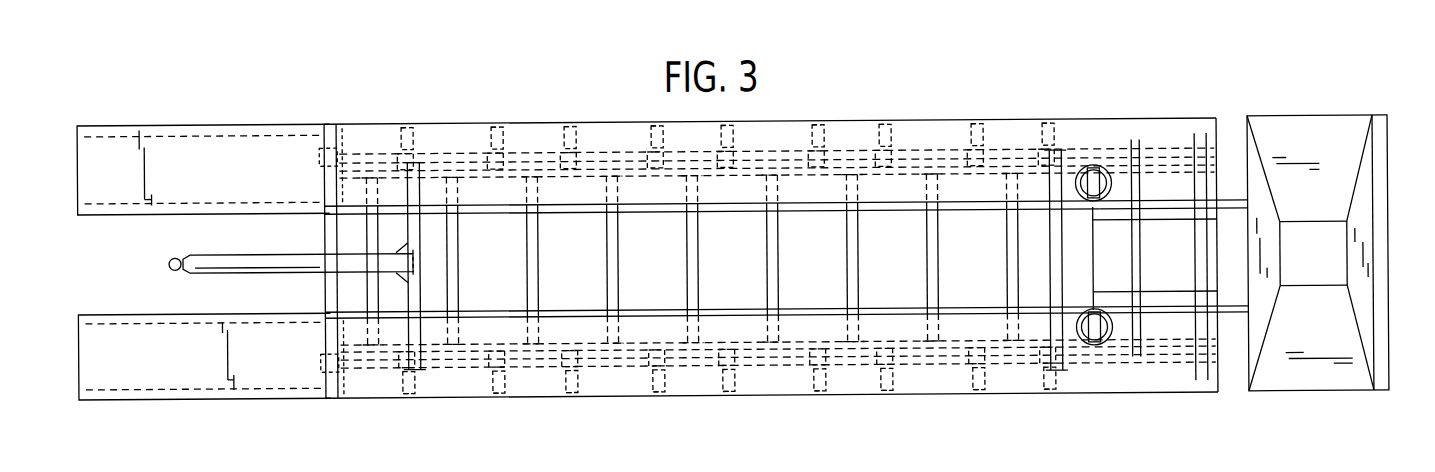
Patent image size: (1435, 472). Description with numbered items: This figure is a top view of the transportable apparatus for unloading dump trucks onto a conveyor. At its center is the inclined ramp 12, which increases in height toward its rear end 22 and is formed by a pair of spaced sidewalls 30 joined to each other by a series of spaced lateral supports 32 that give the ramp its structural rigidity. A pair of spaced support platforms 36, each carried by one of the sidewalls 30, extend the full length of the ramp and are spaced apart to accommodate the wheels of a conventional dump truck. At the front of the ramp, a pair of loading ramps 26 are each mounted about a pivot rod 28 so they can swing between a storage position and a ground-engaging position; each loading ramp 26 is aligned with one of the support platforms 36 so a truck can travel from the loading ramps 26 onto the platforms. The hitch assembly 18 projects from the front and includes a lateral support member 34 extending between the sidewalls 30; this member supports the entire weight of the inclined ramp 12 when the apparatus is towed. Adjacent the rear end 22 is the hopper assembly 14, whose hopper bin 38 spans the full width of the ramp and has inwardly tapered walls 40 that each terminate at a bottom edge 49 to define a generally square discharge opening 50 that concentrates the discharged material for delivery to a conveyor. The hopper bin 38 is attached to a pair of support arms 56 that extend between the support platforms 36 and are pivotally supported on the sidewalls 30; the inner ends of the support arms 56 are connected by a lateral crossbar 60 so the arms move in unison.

The inclined ramp 12 is at (827, 90).
The hopper assembly 14 is at (1300, 90).
The hitch assembly 18 is at (212, 257).
The rear end 22 is at (1220, 134).
The loading ramps 26 is at (197, 127).
The pivot rod 28 is at (328, 128).
The sidewalls 30 is at (913, 156).
The lateral supports 32 is at (615, 270).
The lateral support member 34 is at (413, 235).
The support platforms 36 is at (608, 126).
The hopper bin 38 is at (1387, 161).
The inwardly tapered walls 40 is at (1325, 137).
The bottom edge 49 is at (1305, 229).
The discharge opening 50 is at (1330, 262).
The support arms 56 is at (1166, 214).
The lateral crossbar 60 is at (1097, 266).